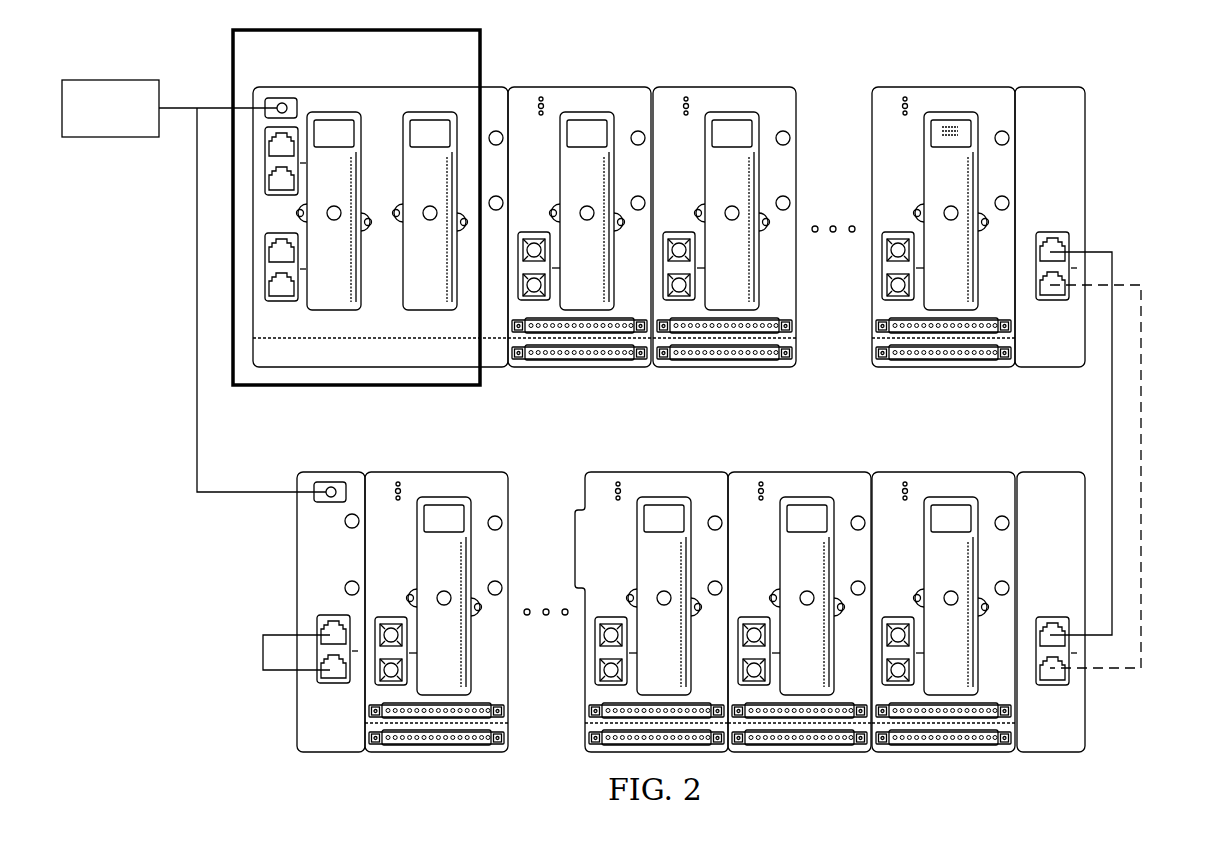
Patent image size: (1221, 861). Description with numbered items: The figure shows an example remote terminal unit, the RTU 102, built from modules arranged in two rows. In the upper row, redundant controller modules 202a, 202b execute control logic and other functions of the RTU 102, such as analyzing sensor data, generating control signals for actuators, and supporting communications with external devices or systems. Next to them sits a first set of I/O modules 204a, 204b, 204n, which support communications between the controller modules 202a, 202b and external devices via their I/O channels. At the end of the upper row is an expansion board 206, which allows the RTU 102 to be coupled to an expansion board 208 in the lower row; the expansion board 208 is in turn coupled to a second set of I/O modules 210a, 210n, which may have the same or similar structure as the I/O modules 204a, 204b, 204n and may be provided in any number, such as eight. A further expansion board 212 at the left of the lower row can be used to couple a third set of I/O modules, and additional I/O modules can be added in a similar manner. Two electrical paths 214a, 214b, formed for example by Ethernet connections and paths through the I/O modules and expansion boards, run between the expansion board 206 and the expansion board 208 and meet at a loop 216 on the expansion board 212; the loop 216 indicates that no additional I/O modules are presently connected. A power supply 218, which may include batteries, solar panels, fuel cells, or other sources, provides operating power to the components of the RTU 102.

The RTU 102 is at (1150, 152).
The controller module 202a is at (333, 123).
The controller module 202b is at (429, 123).
The I/O module 204a is at (586, 123).
The I/O module 204b is at (731, 123).
The I/O module 204n is at (952, 123).
The expansion board 206 is at (1028, 80).
The expansion board 208 is at (1078, 712).
The I/O module 210a is at (954, 461).
The I/O module 210n is at (426, 463).
The expansion board 212 is at (300, 711).
The electrical path 214a is at (1112, 415).
The electrical path 214b is at (1142, 363).
The loop 216 is at (263, 652).
The power supply 218 is at (110, 80).